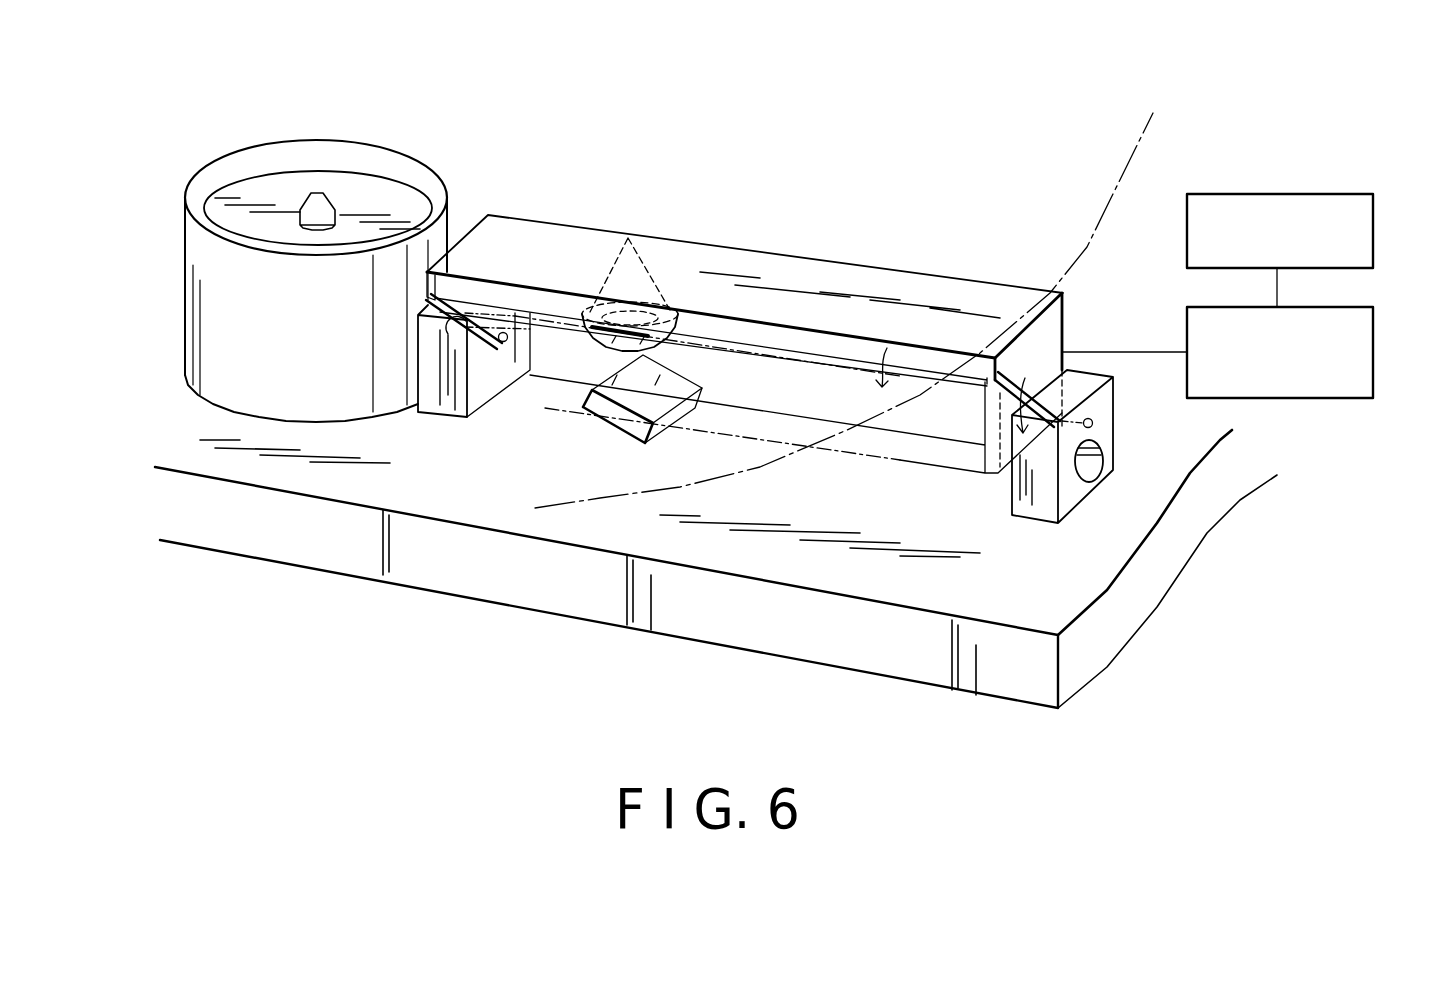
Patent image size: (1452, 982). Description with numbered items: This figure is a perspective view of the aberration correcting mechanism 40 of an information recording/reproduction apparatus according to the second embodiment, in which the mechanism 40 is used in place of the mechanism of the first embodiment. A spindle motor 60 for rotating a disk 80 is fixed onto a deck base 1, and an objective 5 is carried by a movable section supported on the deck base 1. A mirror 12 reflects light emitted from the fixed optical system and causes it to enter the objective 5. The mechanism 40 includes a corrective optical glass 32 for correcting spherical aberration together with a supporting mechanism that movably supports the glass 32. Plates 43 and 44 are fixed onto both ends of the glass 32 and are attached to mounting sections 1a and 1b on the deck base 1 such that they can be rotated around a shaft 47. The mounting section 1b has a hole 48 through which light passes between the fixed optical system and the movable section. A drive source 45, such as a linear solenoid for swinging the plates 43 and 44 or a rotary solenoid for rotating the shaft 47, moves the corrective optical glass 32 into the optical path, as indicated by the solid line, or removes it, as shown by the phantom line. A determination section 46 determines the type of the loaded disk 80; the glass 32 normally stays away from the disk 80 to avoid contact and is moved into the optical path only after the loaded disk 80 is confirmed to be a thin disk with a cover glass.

The deck base 1 is at (845, 655).
The mounting section 1a is at (440, 405).
The mounting section 1b is at (1045, 520).
The objective 5 is at (610, 338).
The mirror 12 is at (618, 410).
The corrective optical glass 32 is at (957, 285).
The aberration correcting mechanism 40 is at (824, 236).
The plate 43 is at (445, 332).
The plate 44 is at (1060, 340).
The drive source 45 is at (1373, 352).
The determination section 46 is at (1373, 232).
The shaft 47 is at (503, 342).
The hole 48 is at (1105, 452).
The spindle motor 60 is at (410, 163).
The disk 80 is at (1142, 153).